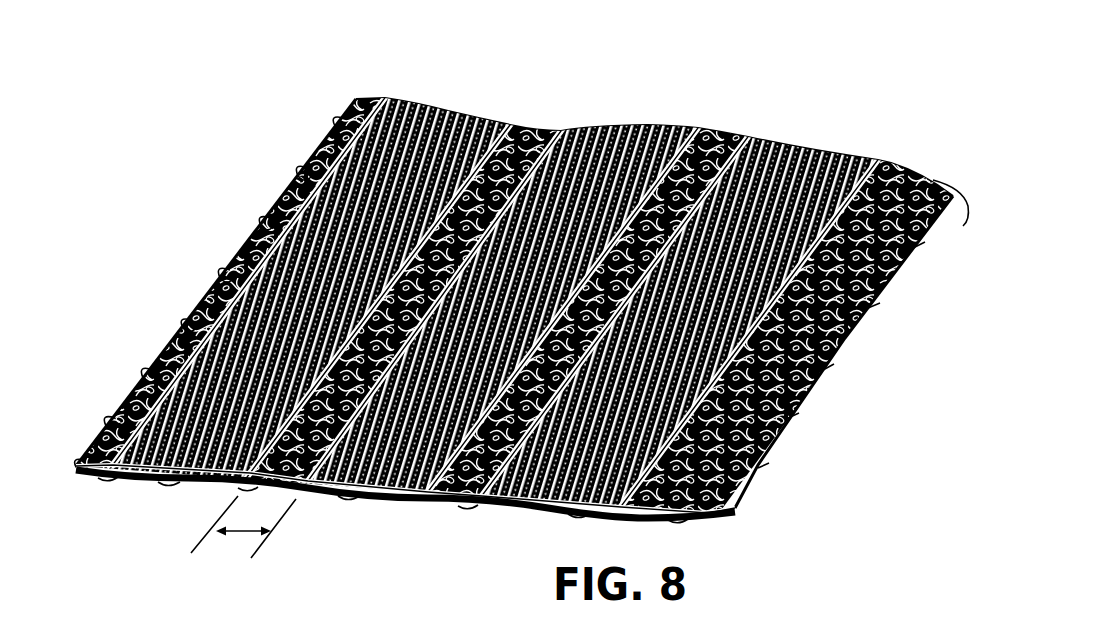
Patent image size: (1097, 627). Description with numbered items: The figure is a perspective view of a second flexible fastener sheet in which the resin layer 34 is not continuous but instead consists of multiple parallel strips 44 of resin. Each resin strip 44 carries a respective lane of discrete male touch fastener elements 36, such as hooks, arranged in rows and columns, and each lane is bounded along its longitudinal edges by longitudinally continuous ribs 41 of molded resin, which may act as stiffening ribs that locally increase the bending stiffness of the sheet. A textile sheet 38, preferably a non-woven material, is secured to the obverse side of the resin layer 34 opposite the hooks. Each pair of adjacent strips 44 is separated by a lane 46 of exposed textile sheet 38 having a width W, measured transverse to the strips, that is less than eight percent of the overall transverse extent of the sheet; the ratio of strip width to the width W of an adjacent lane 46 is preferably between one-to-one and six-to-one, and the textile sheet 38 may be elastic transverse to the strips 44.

The longitudinally continuous rib 41 is at (380, 90).
The resin strip 44 is at (433, 97).
The lane of exposed textile sheet 46 is at (525, 120).
The male touch fastener element 36 is at (157, 473).
The resin layer 34 is at (405, 493).
The textile sheet 38 is at (720, 493).
The width of exposed textile lane W is at (243, 533).